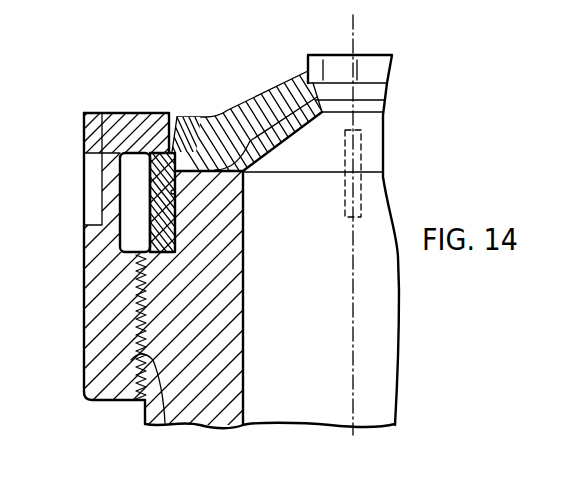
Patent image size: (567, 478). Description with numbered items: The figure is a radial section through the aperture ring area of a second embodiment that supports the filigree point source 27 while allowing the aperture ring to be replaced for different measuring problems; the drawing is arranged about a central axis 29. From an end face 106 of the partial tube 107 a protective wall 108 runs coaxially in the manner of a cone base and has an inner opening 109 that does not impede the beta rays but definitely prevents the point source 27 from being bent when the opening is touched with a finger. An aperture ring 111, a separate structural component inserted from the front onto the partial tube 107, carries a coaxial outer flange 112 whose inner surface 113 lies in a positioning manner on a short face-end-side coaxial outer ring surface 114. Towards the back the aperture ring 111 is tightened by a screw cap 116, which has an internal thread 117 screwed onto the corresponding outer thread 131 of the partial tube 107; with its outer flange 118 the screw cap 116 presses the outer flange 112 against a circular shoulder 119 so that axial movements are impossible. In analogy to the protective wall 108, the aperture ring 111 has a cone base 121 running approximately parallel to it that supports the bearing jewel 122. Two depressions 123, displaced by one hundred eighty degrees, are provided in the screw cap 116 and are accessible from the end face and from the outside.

The point source 27 is at (362, 154).
The center axis 29 is at (356, 29).
The end face 106 is at (190, 167).
The partial tube 107 is at (208, 312).
The protective wall 108 is at (290, 125).
The inner opening 109 is at (370, 102).
The aperture ring 111 is at (255, 110).
The outer flange 112 is at (155, 222).
The inner surface 113 is at (177, 228).
The outer ring surface 114 is at (177, 200).
The screw cap 116 is at (110, 322).
The internal thread 117 is at (131, 360).
The outer flange 118 is at (138, 132).
The circular shoulder 119 is at (120, 252).
The cone base 121 is at (277, 107).
The bearing jewel 122 is at (373, 73).
The depressions 123 is at (92, 182).
The outer thread 131 is at (165, 423).